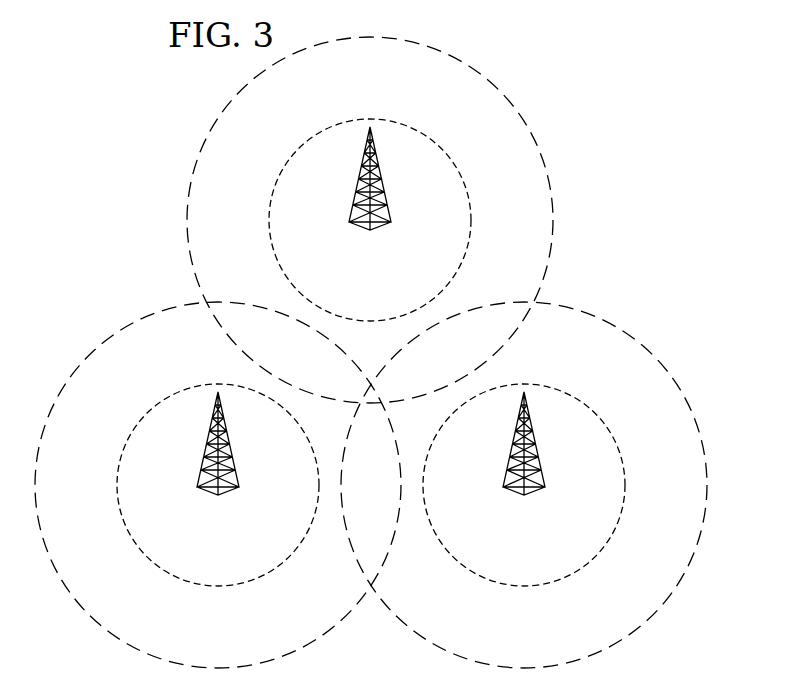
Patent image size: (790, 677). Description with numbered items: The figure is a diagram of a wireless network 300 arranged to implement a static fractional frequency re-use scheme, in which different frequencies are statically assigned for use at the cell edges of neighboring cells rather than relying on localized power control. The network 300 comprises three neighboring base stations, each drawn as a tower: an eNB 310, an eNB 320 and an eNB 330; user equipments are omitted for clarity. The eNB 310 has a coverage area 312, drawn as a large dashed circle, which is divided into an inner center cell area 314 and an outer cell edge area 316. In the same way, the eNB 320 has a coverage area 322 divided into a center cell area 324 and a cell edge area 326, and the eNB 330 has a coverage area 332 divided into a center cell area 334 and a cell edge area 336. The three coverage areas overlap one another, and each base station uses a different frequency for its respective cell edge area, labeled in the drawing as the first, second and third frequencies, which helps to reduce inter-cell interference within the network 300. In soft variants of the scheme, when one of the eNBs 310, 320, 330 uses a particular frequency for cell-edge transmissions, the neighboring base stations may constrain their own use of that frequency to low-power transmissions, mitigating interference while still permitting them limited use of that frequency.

The network 300 is at (604, 184).
The eNB 310 is at (356, 190).
The coverage area 312 is at (505, 85).
The center cell area 314 is at (350, 305).
The cell edge area 316 is at (213, 256).
The eNB 320 is at (205, 455).
The coverage area 322 is at (82, 618).
The center cell area 324 is at (198, 570).
The cell edge area 326 is at (61, 522).
The eNB 330 is at (538, 454).
The coverage area 332 is at (656, 620).
The center cell area 334 is at (503, 570).
The cell edge area 336 is at (640, 522).